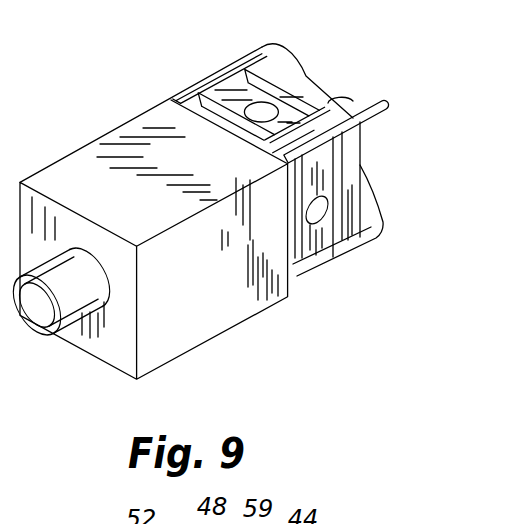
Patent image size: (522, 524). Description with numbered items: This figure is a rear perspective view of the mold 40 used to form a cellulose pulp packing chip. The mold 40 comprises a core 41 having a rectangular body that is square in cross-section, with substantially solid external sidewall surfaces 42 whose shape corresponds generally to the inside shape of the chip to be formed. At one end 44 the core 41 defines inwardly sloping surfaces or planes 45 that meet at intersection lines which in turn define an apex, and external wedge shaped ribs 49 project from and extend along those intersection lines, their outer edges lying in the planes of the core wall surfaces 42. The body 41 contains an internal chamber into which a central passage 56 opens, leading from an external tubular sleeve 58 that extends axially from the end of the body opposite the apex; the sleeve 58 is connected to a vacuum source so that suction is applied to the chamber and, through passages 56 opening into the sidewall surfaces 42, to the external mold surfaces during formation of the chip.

The mold 40 is at (123, 110).
The core 41 is at (216, 351).
The external sidewall surfaces 42 is at (122, 211).
The end 44 is at (309, 66).
The inwardly sloping surfaces 45 is at (280, 137).
The external wedge shaped ribs 49 is at (379, 98).
The passages 56 is at (313, 212).
The external tubular sleeve 58 is at (339, 232).